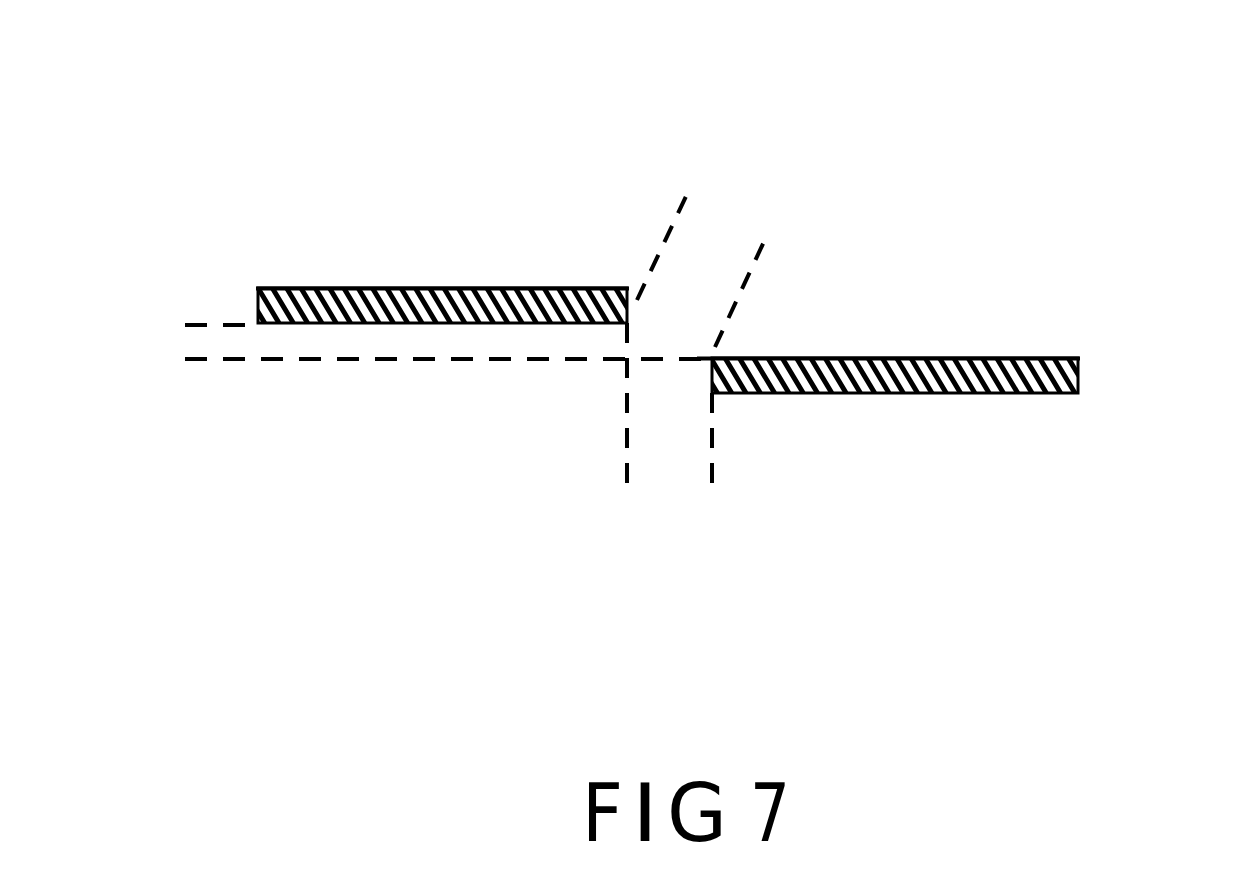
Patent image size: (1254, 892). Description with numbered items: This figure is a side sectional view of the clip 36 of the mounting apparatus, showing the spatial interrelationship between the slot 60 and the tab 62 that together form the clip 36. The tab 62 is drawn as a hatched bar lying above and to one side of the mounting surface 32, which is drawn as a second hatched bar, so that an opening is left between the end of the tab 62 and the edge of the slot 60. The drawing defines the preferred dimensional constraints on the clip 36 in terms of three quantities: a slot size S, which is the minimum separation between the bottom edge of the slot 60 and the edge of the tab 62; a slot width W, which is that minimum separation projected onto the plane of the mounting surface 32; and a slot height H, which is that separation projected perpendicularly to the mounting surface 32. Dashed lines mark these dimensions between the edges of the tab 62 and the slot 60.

The clip 36 is at (920, 258).
The tab 62 is at (540, 288).
The mounting surface 32 is at (1015, 393).
The slot 60 is at (660, 370).